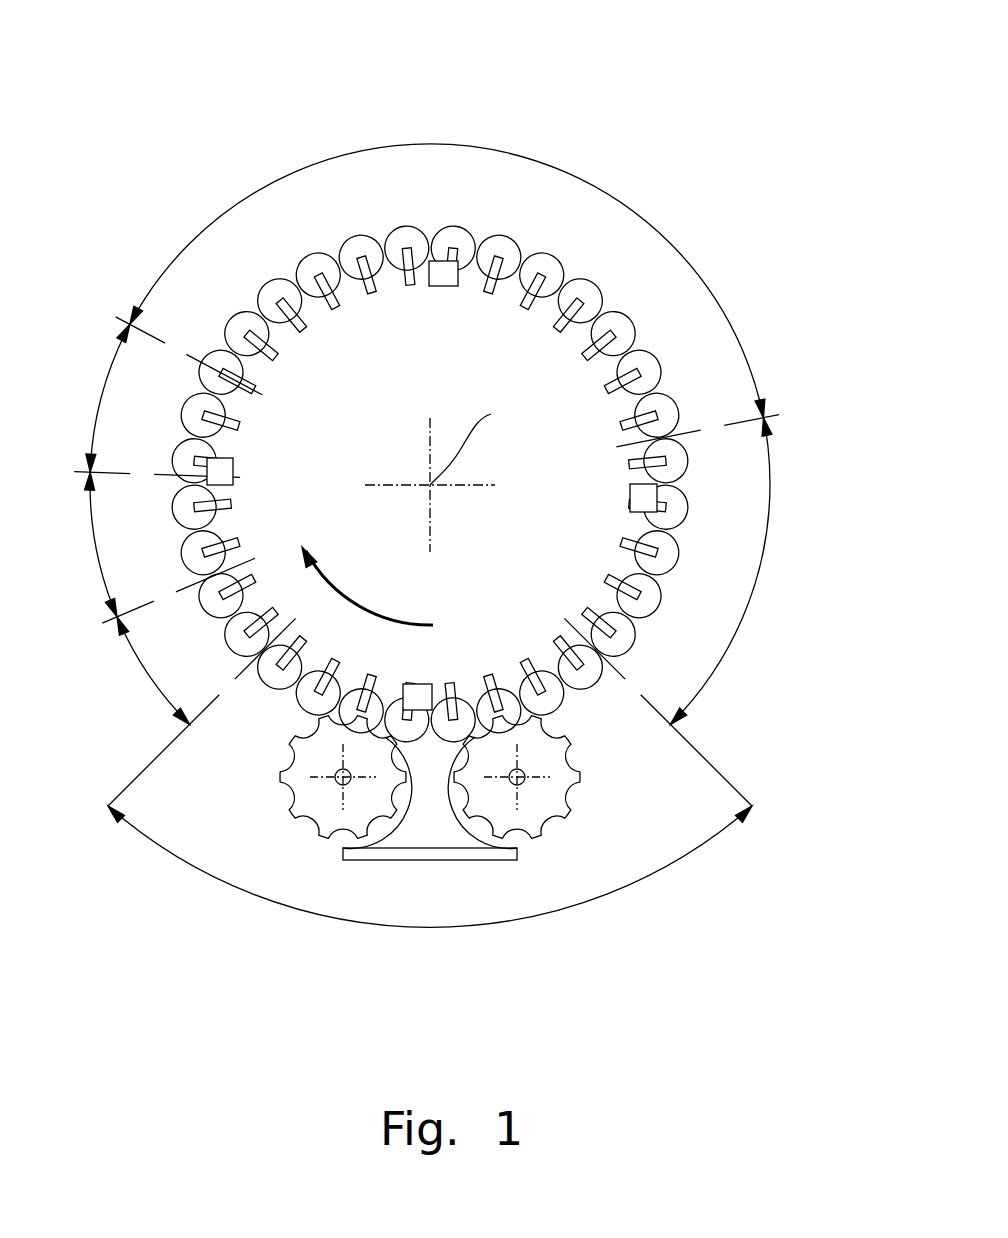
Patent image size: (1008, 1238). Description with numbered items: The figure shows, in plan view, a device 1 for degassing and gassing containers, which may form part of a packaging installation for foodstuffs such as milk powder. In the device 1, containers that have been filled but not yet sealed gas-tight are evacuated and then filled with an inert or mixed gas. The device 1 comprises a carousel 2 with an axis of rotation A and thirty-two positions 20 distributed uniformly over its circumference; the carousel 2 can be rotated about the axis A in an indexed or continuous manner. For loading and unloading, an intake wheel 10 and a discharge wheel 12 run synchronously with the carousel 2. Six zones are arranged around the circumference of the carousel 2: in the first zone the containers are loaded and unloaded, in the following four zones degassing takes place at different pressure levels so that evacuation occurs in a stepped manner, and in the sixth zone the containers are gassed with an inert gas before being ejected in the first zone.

The device for degassing and gassing containers 1 is at (458, 497).
The carousel 2 is at (328, 407).
The positions 20 is at (350, 240).
The intake wheel 10 is at (298, 752).
The discharge wheel 12 is at (557, 753).